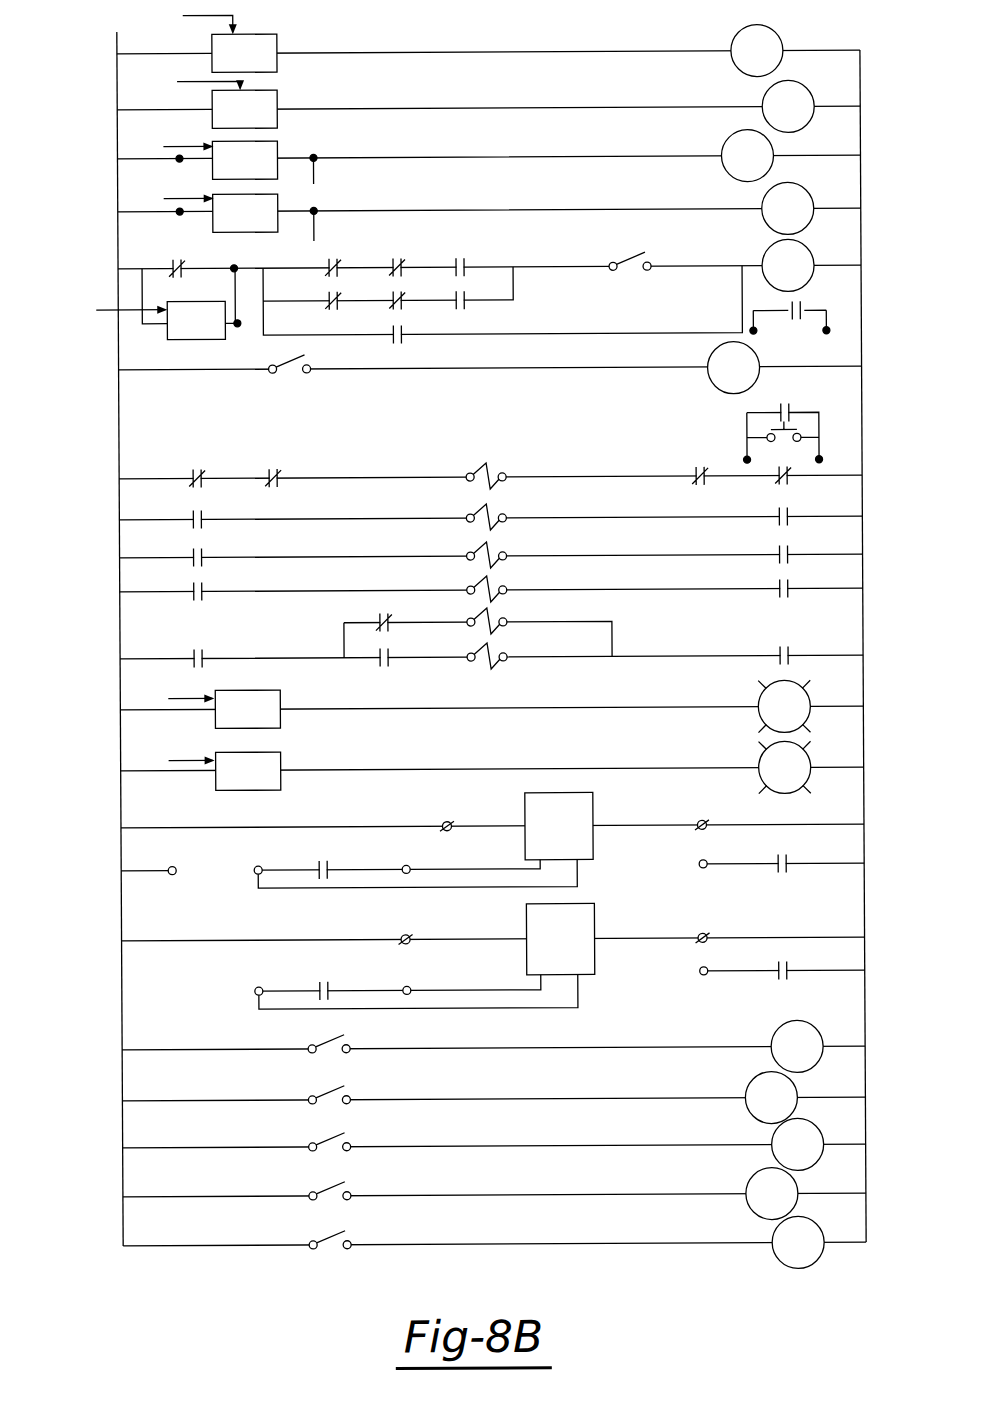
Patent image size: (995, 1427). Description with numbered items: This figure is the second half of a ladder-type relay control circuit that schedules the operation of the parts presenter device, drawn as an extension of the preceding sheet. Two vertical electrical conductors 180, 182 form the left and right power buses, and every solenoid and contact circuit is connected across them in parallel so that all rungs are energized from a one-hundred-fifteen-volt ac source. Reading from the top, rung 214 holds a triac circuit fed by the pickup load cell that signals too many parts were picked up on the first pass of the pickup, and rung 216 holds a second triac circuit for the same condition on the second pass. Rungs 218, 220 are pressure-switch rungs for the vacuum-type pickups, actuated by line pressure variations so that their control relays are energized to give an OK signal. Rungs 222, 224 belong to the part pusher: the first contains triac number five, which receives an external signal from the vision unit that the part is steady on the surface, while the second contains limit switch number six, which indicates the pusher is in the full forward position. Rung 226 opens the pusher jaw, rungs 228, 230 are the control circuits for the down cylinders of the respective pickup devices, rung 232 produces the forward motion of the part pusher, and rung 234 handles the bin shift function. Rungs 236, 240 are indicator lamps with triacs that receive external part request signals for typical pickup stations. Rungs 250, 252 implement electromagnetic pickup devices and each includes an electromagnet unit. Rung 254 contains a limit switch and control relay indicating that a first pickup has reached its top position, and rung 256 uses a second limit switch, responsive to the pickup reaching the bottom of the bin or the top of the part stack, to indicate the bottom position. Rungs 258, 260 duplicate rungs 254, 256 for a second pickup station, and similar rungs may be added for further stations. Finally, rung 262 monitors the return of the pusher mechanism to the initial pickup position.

The electrical conductor 180 is at (115, 93).
The electrical conductor 182 is at (936, 116).
The rung 214 is at (656, 40).
The rung 216 is at (640, 94).
The rung 218 is at (634, 147).
The rung 220 is at (631, 197).
The rung 222 is at (618, 238).
The rung 224 is at (565, 368).
The rung 226 is at (630, 446).
The rung 228 is at (347, 518).
The rung 230 is at (347, 556).
The rung 232 is at (345, 590).
The rung 234 is at (326, 626).
The rung 236 is at (436, 702).
The rung 240 is at (466, 760).
The rung 250 is at (405, 800).
The rung 252 is at (356, 912).
The rung 254 is at (162, 1048).
The rung 256 is at (162, 1099).
The rung 258 is at (160, 1146).
The rung 260 is at (170, 1195).
The rung 262 is at (165, 1244).